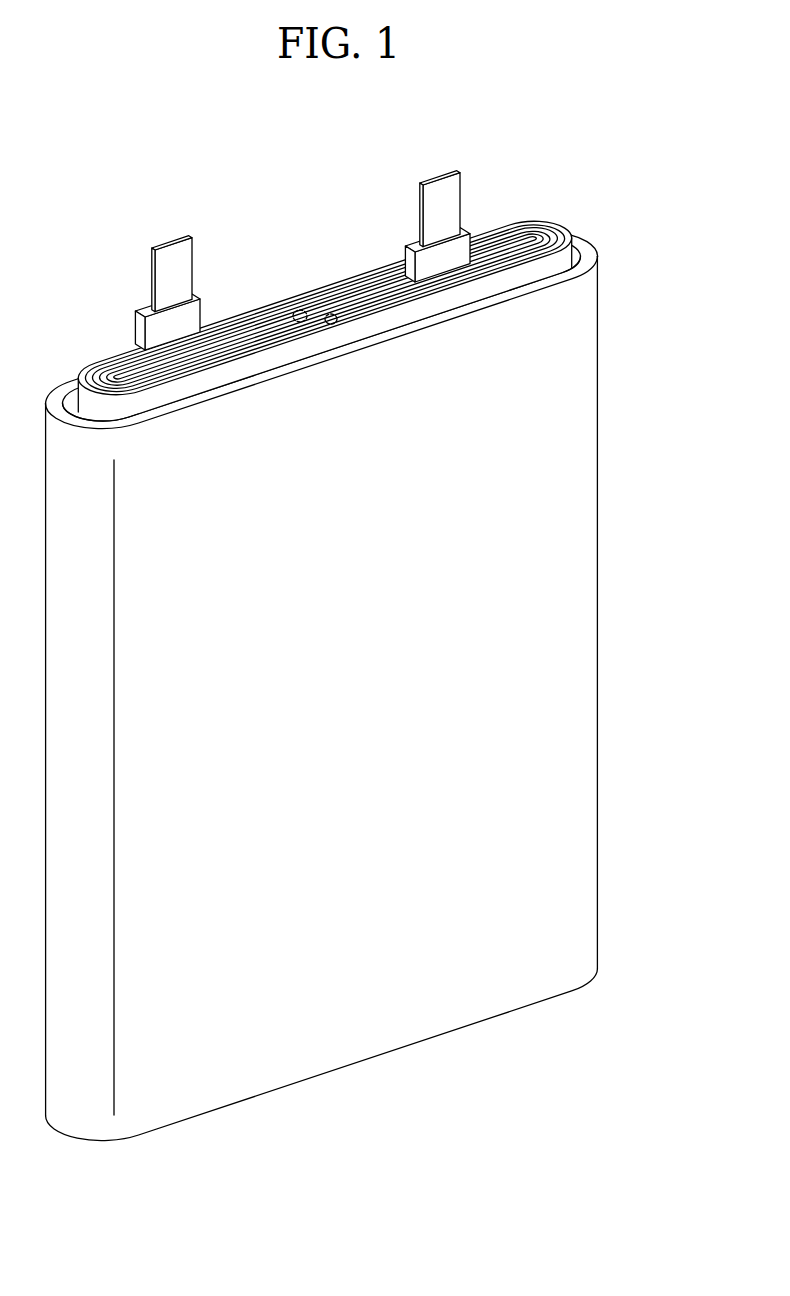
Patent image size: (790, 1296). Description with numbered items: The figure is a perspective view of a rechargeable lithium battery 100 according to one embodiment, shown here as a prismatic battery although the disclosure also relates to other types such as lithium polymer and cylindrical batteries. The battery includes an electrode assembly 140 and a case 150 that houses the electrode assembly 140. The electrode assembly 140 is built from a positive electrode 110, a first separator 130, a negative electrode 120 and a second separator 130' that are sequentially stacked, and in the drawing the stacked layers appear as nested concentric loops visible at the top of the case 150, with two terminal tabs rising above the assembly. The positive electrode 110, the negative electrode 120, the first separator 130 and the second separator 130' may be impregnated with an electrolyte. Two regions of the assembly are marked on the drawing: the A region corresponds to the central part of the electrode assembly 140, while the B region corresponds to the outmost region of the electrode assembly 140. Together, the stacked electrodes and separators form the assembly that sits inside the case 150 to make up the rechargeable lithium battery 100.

The rechargeable lithium battery 100 is at (162, 170).
The positive electrode 110 is at (566, 232).
The negative electrode 120 is at (532, 227).
The first separator 130 is at (325, 271).
The second separator 130' is at (324, 253).
The electrode assembly 140 is at (335, 268).
The case 150 is at (548, 636).
The A region A is at (300, 310).
The B region B is at (335, 325).